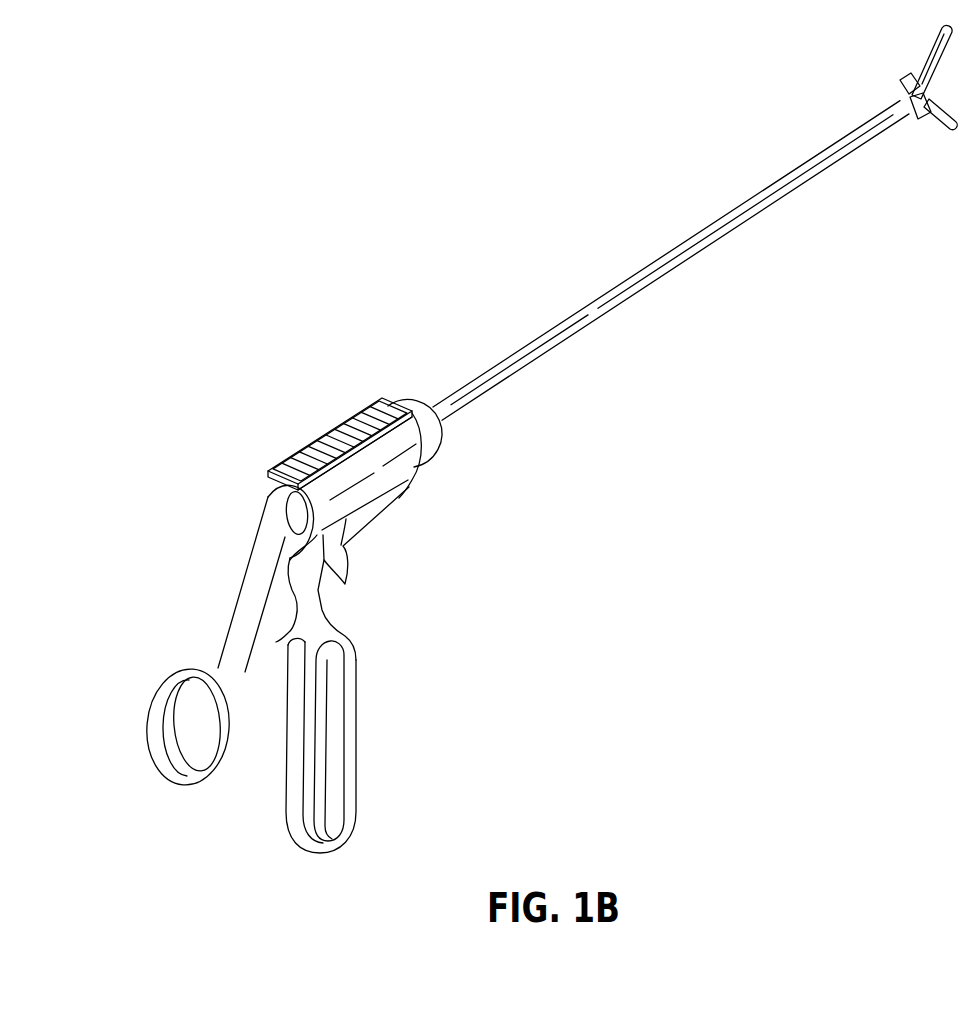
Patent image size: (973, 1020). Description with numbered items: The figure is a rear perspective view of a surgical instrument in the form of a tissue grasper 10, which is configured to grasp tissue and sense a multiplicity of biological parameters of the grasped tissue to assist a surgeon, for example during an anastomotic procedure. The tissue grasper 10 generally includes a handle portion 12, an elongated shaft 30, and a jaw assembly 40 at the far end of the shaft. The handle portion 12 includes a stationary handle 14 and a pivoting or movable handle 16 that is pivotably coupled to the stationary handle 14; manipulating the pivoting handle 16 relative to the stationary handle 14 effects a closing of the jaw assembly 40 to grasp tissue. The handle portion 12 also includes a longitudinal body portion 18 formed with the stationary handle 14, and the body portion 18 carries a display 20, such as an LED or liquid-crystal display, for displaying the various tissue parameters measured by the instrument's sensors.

The tissue grasper 10 is at (333, 292).
The handle portion 12 is at (202, 497).
The stationary handle 14 is at (352, 736).
The pivoting or movable handle 16 is at (238, 621).
The longitudinal body portion 18 is at (418, 456).
The display 20 is at (345, 448).
The elongated shaft 30 is at (672, 272).
The jaw assembly 40 is at (901, 67).